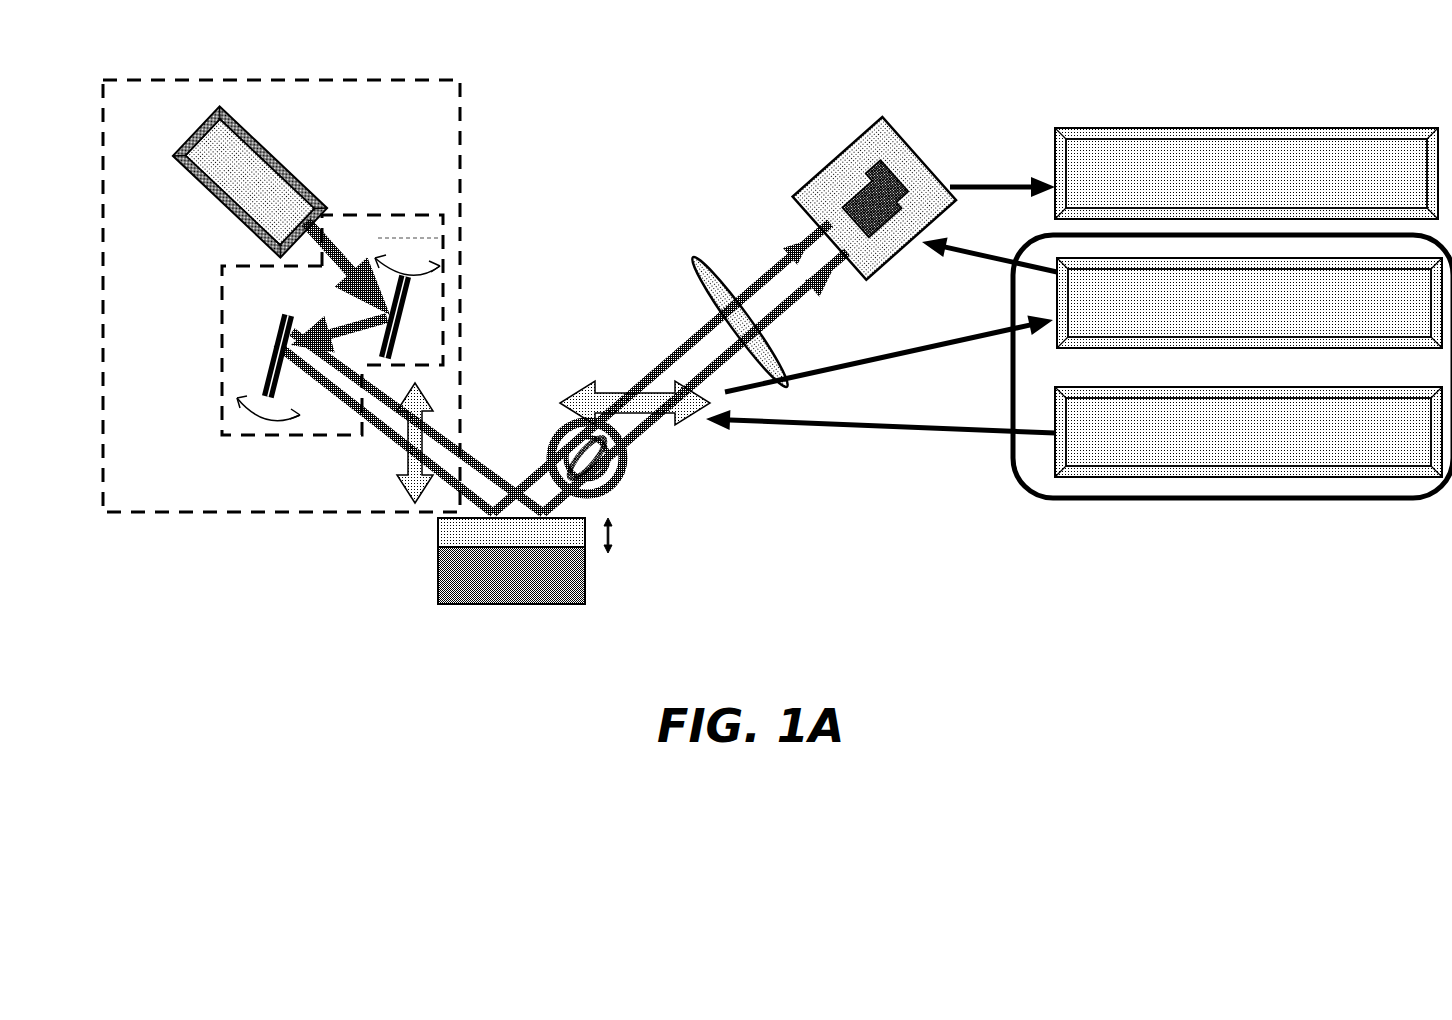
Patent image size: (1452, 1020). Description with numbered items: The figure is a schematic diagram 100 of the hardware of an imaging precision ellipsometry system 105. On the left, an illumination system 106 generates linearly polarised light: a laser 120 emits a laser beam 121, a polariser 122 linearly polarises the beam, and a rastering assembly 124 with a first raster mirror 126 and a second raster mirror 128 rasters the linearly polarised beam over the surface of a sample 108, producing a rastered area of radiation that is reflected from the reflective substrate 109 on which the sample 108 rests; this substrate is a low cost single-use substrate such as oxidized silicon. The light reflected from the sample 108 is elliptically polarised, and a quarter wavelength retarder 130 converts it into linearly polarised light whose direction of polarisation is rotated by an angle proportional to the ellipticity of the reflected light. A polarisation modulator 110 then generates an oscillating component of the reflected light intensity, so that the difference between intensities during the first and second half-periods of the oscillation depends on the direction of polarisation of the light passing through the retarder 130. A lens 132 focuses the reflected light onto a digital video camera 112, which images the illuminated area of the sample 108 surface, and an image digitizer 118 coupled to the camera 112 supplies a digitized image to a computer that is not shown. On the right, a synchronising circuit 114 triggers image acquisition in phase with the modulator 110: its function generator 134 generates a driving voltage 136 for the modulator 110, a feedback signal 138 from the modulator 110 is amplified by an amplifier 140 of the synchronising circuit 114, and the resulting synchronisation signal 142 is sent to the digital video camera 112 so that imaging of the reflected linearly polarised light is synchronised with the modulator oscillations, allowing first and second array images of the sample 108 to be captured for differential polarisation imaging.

The schematic diagram 100 is at (1000, 665).
The imaging precision ellipsometry system 105 is at (678, 75).
The illumination system 106 is at (462, 125).
The sample 108 is at (437, 523).
The reflective substrate 109 is at (437, 583).
The polarisation modulator 110 is at (603, 394).
The digital video camera 112 is at (843, 146).
The synchronising circuit 114 is at (950, 185).
The image digitizer 118 is at (1308, 128).
The laser 120 is at (250, 142).
The laser beam 121 is at (320, 216).
The polariser 122 is at (425, 413).
The rastering assembly 124 is at (222, 302).
The first raster mirror 126 is at (403, 323).
The second raster mirror 128 is at (286, 320).
The quarter wavelength retarder 130 is at (626, 468).
The lens 132 is at (692, 258).
The function generator 134 is at (1240, 480).
The driving voltage 136 is at (835, 440).
The feedback signal 138 is at (870, 368).
The amplifier 140 is at (1175, 348).
The synchronisation signal 142 is at (990, 258).